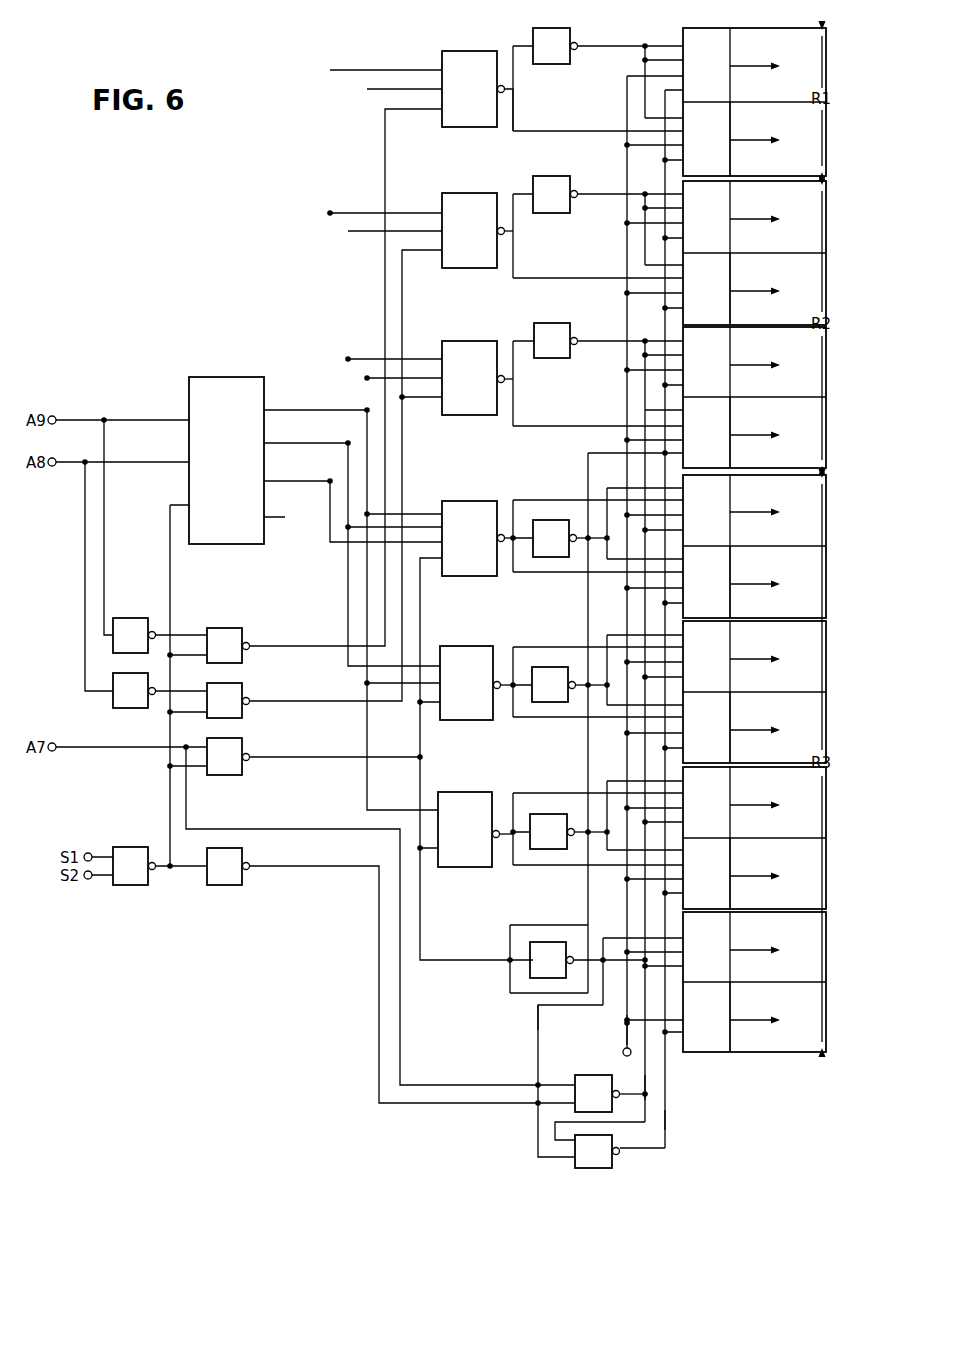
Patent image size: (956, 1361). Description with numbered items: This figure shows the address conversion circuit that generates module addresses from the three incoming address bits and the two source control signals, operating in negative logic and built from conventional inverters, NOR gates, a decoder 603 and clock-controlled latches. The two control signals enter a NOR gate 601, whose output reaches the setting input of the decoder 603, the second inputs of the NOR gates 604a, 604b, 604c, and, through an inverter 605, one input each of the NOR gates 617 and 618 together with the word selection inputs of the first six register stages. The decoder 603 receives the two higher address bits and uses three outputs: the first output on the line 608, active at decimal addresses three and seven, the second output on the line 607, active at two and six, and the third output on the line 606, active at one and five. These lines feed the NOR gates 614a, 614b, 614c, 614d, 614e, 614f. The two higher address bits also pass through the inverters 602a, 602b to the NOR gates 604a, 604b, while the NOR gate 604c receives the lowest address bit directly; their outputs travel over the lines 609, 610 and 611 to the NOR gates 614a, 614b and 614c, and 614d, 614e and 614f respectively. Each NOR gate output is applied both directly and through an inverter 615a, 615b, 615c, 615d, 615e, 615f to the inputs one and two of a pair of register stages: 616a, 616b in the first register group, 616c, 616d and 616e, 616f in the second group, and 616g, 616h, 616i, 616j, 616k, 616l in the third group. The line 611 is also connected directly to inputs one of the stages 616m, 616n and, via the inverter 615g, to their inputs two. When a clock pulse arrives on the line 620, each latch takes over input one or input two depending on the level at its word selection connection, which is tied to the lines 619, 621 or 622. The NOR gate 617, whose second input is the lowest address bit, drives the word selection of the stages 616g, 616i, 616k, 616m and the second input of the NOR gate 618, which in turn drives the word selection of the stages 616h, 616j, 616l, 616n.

The NOR gate 601 is at (138, 840).
The inverter 602a is at (142, 611).
The inverter 602b is at (130, 708).
The decoder 603 is at (222, 378).
The NOR gate 604a is at (226, 629).
The NOR gate 604b is at (240, 685).
The NOR gate 604c is at (240, 742).
The inverter 605 is at (238, 860).
The output line 606 is at (330, 530).
The output line 607 is at (348, 563).
The output line 608 is at (367, 130).
The line 609 is at (288, 648).
The line 610 is at (294, 703).
The line 611 is at (297, 760).
The NOR gate 614a is at (463, 52).
The NOR gate 614b is at (463, 194).
The NOR gate 614c is at (463, 342).
The NOR gate 614d is at (463, 502).
The NOR gate 614e is at (461, 647).
The NOR gate 614f is at (461, 793).
The inverter 615a is at (551, 28).
The inverter 615b is at (551, 176).
The inverter 615c is at (551, 324).
The inverter 615d is at (551, 521).
The inverter 615e is at (547, 668).
The inverter 615f is at (546, 813).
The inverter 615g is at (547, 942).
The register stage 616a is at (733, 50).
The register stage 616b is at (733, 124).
The register stage 616c is at (733, 203).
The register stage 616d is at (733, 275).
The register stage 616e is at (733, 349).
The register stage 616f is at (733, 419).
The register stage 616g is at (733, 497).
The register stage 616h is at (733, 568).
The register stage 616i is at (733, 643).
The register stage 616j is at (733, 714).
The register stage 616k is at (733, 789).
The register stage 616l is at (733, 860).
The register stage 616m is at (733, 934).
The register stage 616n is at (733, 1004).
The NOR gate 617 is at (578, 1078).
The NOR gate 618 is at (598, 1169).
The line 619 is at (538, 1025).
The clock line 620 is at (627, 1025).
The line 621 is at (645, 1083).
The line 622 is at (665, 1120).